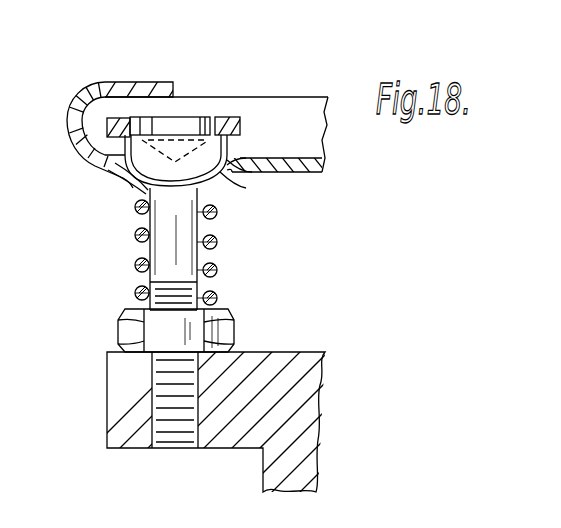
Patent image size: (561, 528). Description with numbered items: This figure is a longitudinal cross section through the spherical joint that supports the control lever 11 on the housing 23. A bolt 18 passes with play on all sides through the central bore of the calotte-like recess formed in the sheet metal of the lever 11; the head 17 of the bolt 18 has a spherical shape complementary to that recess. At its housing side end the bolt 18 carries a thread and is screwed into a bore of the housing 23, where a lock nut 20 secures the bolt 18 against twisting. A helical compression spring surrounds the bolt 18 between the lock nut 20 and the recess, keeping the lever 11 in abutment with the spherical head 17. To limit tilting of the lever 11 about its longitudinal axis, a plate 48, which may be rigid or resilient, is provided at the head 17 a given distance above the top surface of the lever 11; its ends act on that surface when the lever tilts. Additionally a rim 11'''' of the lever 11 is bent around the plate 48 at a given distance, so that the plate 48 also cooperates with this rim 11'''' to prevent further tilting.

The control lever 11 is at (205, 158).
The rim of lever 11'''' is at (142, 65).
The head of bolt 17 is at (177, 123).
The plate 48 is at (242, 130).
The bolt 18 is at (160, 248).
The lock nut 20 is at (127, 330).
The housing 23 is at (303, 398).